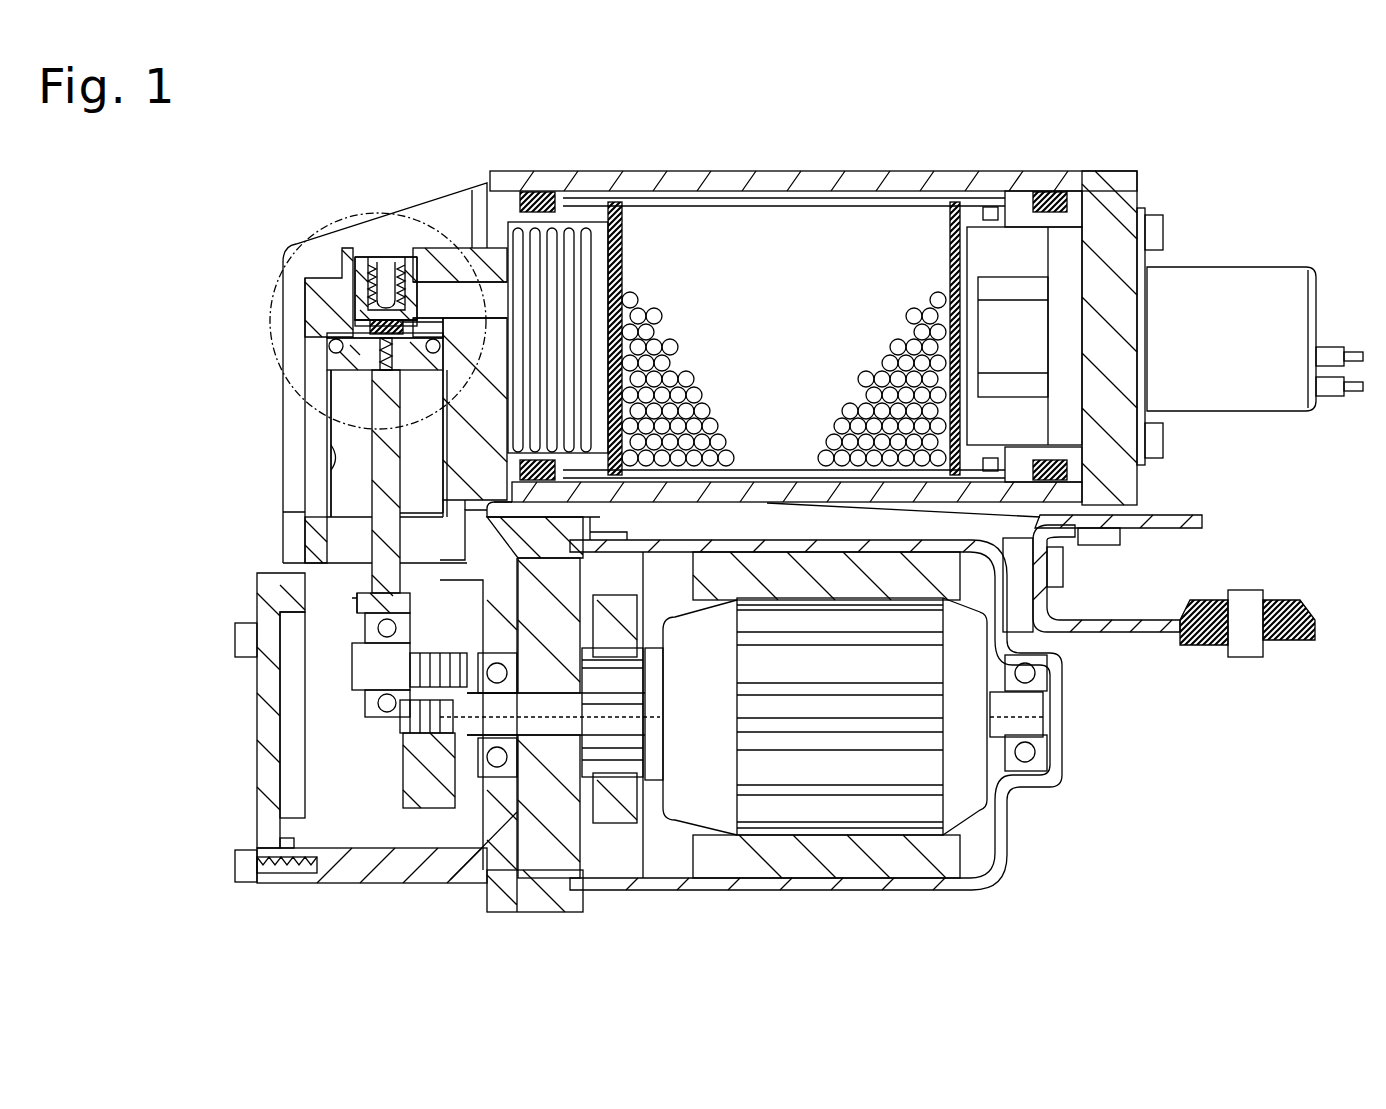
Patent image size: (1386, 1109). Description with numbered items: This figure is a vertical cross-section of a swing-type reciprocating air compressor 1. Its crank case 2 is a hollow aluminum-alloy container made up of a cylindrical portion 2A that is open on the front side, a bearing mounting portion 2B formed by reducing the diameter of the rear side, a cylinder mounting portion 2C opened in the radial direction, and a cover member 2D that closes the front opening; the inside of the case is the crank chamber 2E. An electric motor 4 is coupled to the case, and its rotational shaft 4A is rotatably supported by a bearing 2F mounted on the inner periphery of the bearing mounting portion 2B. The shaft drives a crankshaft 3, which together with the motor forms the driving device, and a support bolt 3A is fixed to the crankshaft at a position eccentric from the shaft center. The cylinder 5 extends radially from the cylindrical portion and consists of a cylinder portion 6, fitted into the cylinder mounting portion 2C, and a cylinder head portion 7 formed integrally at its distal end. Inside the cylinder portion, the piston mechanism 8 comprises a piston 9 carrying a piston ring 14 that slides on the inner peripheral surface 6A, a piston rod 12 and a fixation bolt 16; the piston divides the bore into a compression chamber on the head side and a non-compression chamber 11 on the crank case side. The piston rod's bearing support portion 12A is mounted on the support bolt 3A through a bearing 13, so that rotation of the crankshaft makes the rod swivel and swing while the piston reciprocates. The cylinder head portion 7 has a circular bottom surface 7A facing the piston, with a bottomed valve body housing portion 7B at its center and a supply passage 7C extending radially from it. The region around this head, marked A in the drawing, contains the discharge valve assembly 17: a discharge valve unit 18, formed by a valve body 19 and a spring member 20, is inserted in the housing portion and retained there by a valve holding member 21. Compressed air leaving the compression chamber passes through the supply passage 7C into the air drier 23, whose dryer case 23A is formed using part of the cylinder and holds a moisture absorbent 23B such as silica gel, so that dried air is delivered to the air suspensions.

The reciprocating air compressor 1 is at (280, 242).
The crank case 2 is at (382, 868).
The cylindrical portion 2A is at (338, 872).
The bearing mounting portion 2B is at (513, 830).
The cylinder mounting portion 2C is at (293, 530).
The cover member 2D is at (267, 725).
The crank chamber 2E is at (337, 775).
The bearing 2F is at (480, 790).
The crankshaft 3 is at (427, 790).
The support bolt 3A is at (362, 668).
The electric motor 4 is at (808, 765).
The rotational shaft 4A is at (545, 735).
The cylinder 5 is at (298, 410).
The cylinder portion 6 is at (327, 443).
The inner peripheral surface 6A is at (333, 458).
The cylinder head portion 7 is at (353, 310).
The bottom surface 7A is at (345, 345).
The valve body housing portion 7B is at (360, 292).
The supply passage 7C is at (447, 295).
The piston mechanism 8 is at (368, 488).
The piston 9 is at (350, 362).
The non-compression chamber 11 is at (343, 428).
The piston rod 12 is at (380, 547).
The bearing support portion 12A is at (365, 606).
The bearing 13 is at (387, 635).
The piston ring 14 is at (485, 240).
The fixation bolt 16 is at (352, 332).
The discharge valve assembly 17 is at (338, 270).
The discharge valve unit 18 is at (377, 257).
The valve body 19 is at (387, 300).
The spring member 20 is at (427, 297).
The valve holding member 21 is at (353, 326).
The air drier 23 is at (820, 172).
The dryer case 23A is at (915, 183).
The moisture absorbent 23B is at (678, 360).
The region A is at (412, 214).